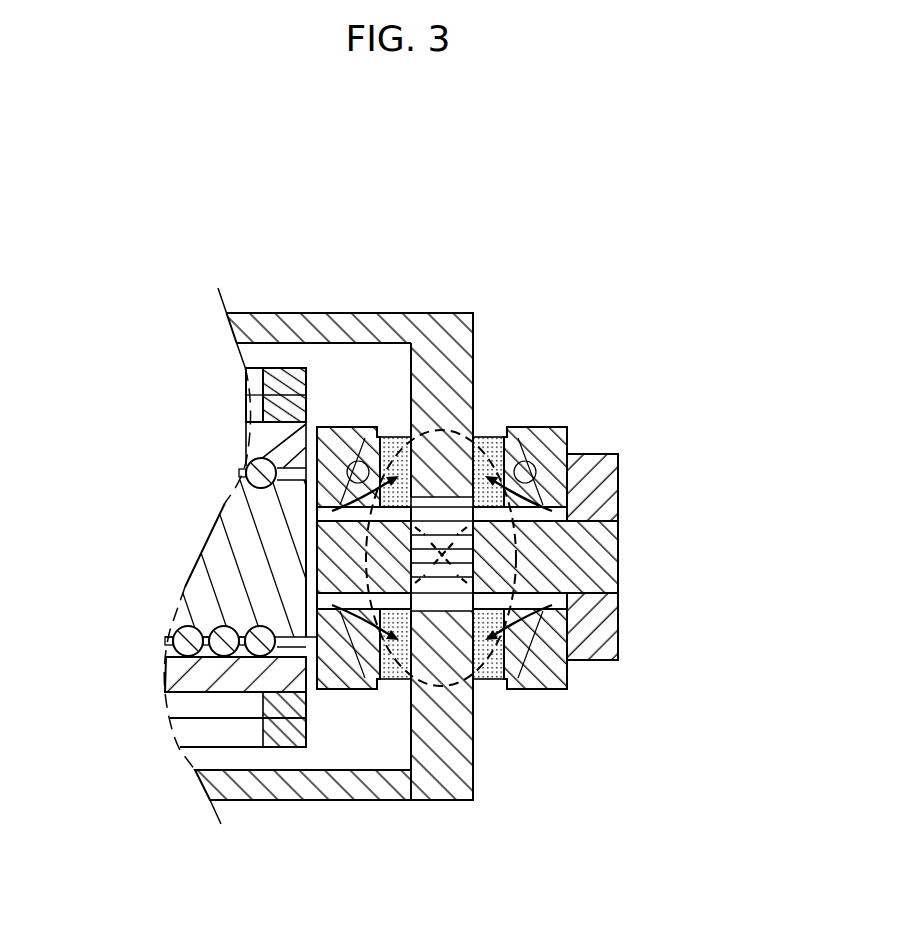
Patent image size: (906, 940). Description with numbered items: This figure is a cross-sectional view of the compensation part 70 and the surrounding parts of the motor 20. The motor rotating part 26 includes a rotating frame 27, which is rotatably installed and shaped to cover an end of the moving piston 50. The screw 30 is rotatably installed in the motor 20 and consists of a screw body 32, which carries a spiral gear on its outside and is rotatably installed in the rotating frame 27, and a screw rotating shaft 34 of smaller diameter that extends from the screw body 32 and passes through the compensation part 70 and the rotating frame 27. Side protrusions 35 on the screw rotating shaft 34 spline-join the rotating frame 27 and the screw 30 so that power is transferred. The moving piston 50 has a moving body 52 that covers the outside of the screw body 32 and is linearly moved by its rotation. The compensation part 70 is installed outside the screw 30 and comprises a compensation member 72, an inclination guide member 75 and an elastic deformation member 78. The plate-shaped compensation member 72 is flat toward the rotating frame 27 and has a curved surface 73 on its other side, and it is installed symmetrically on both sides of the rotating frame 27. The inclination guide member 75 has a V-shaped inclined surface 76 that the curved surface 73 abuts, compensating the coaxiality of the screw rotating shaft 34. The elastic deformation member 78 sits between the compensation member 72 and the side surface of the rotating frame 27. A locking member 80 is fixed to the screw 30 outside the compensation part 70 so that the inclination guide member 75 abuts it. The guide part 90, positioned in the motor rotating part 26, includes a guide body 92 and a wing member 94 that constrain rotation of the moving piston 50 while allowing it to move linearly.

The motor 20 is at (347, 454).
The motor rotating part 26 is at (443, 243).
The rotating frame 27 is at (370, 313).
The screw 30 is at (619, 475).
The screw body 32 is at (203, 588).
The screw rotating shaft 34 is at (598, 547).
The side protrusions 35 is at (457, 557).
The moving piston 50 is at (186, 773).
The moving body 52 is at (165, 692).
The compensation part 70 is at (455, 626).
The compensation member 72 is at (375, 688).
The curved surface 73 is at (547, 688).
The inclination guide member 75 is at (340, 688).
The inclined surface 76 is at (523, 463).
The elastic deformation member 78 is at (408, 680).
The locking member 80 is at (593, 470).
The guide part 90 is at (285, 295).
The guide body 92 is at (250, 368).
The wing member 94 is at (283, 368).